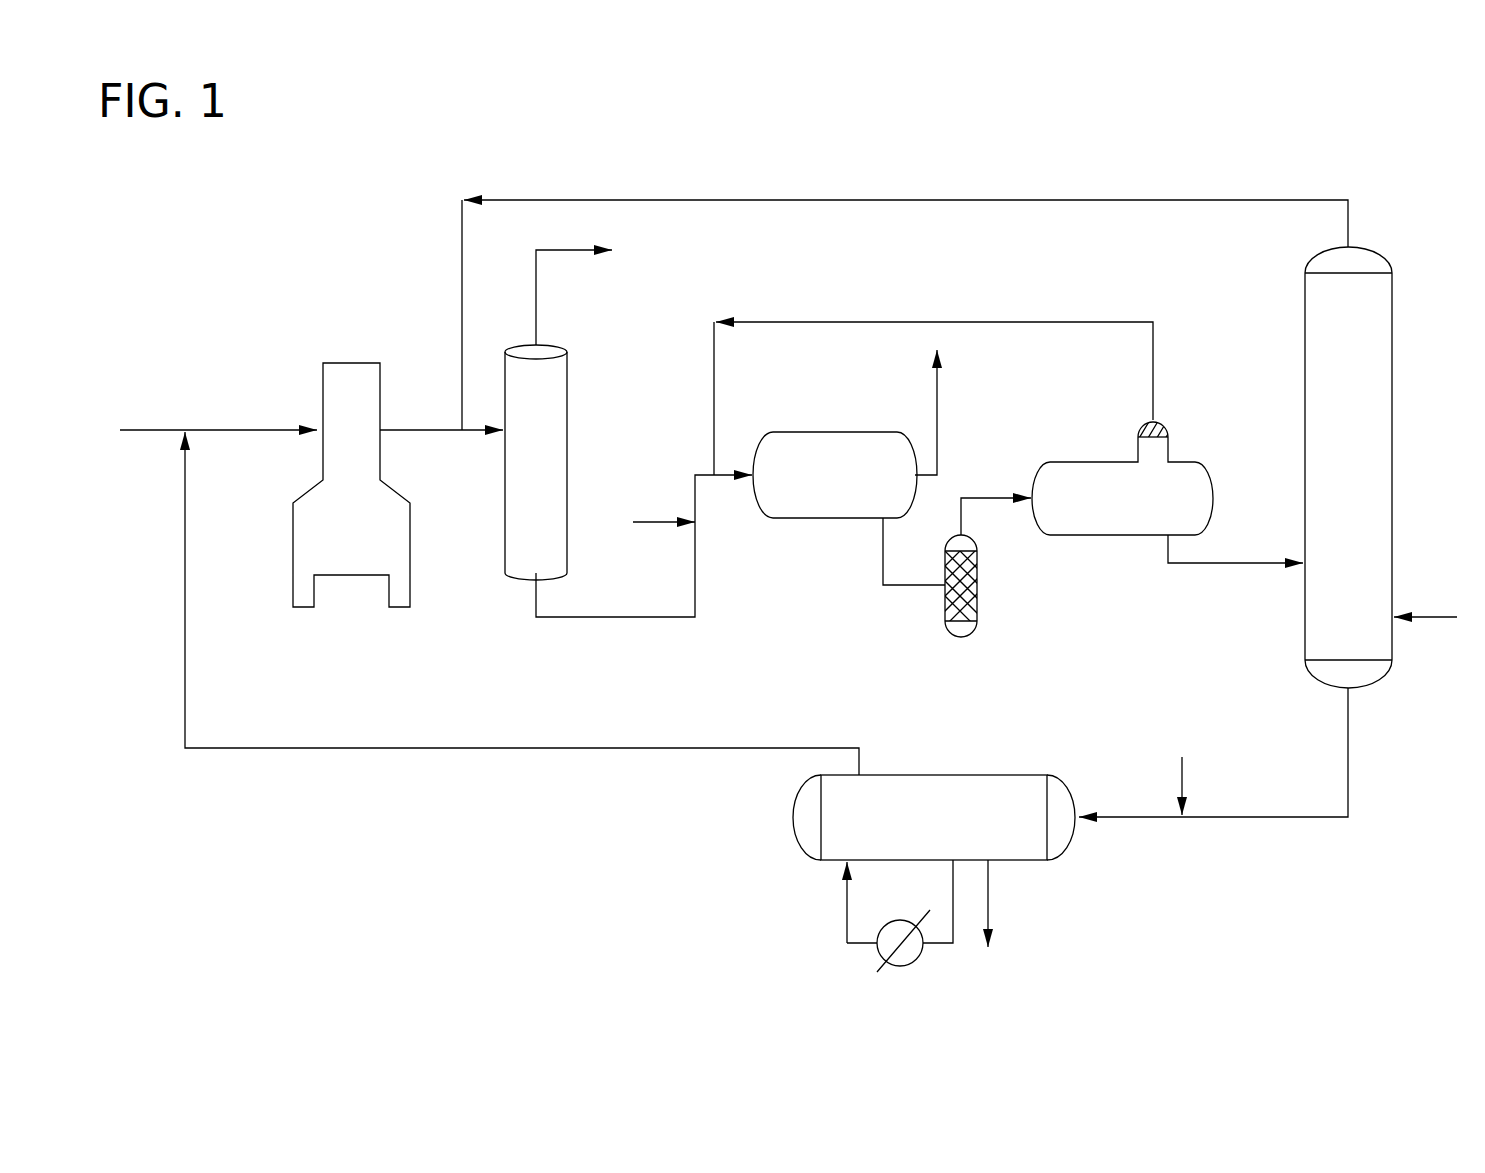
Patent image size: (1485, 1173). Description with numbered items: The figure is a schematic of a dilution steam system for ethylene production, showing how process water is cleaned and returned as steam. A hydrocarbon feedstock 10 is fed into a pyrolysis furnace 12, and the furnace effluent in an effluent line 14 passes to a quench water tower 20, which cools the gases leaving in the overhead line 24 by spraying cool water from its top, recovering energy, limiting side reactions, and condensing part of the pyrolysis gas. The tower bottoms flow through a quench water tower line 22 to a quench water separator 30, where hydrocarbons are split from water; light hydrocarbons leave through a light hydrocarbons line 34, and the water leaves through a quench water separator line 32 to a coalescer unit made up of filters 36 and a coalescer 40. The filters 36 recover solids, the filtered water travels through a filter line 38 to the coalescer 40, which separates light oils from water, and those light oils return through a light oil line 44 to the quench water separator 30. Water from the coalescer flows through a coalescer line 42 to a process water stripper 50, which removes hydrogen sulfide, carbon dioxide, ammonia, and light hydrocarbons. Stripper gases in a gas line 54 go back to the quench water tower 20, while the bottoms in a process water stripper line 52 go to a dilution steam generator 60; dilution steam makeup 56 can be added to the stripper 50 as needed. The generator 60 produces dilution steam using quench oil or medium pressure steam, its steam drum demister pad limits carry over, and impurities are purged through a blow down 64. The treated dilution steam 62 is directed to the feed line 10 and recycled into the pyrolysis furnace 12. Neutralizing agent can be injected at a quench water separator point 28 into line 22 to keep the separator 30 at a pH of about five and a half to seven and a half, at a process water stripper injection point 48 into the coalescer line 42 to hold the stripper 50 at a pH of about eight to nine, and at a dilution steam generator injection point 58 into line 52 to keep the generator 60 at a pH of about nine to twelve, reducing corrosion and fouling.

The hydrocarbon feedstock 10 is at (235, 430).
The pyrolysis furnace 12 is at (280, 557).
The effluent line 14 is at (432, 430).
The quench water tower 20 is at (500, 553).
The quench water tower line 22 is at (617, 620).
The overhead line 24 is at (540, 305).
The quench water separator point 28 is at (640, 522).
The quench water separator 30 is at (793, 430).
The quench water separator line 32 is at (882, 560).
The light hydrocarbons line 34 is at (933, 398).
The filters 36 is at (940, 617).
The filter line 38 is at (995, 490).
The coalescer 40 is at (1088, 537).
The coalescer line 42 is at (1212, 567).
The light oil line 44 is at (1087, 320).
The process water stripper injection point 48 is at (1248, 561).
The process water stripper 50 is at (1400, 387).
The process water stripper line 52 is at (1350, 755).
The gas line 54 is at (1132, 198).
The dilution steam makeup 56 is at (1447, 617).
The dilution steam generator injection point 58 is at (1183, 770).
The dilution steam generator 60 is at (993, 770).
The treated dilution steam 62 is at (777, 747).
The blow down 64 is at (990, 900).